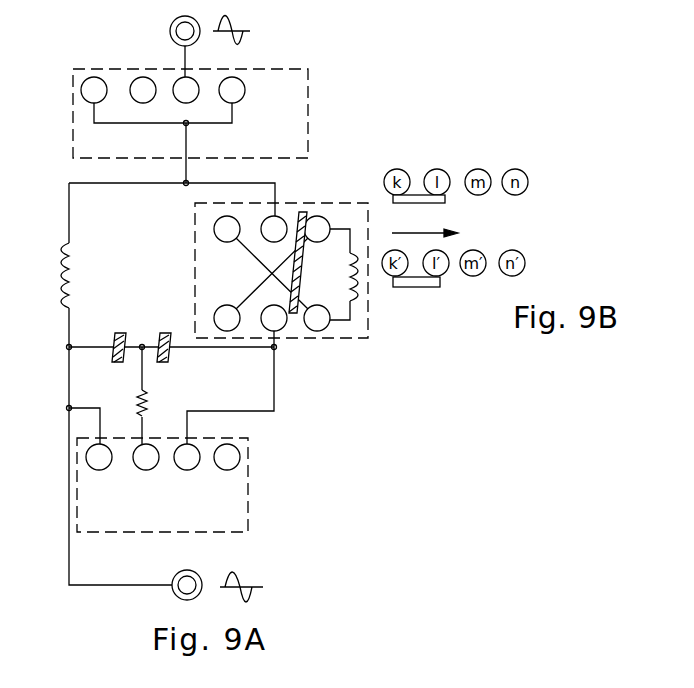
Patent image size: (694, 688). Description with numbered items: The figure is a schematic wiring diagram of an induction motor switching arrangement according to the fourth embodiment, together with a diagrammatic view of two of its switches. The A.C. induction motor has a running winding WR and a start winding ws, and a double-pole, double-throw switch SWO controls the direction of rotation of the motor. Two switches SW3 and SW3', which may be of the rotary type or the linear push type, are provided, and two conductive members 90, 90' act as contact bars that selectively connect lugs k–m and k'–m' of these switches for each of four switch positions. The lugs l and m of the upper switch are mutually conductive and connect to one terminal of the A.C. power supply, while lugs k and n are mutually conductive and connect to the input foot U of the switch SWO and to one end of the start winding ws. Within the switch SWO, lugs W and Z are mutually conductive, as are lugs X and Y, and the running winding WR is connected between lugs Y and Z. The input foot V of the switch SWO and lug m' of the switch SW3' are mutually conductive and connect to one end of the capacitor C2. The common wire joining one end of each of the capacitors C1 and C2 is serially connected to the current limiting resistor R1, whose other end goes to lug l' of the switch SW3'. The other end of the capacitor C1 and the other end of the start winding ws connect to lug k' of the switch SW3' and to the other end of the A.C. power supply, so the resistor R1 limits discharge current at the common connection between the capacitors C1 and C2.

In FIG. 9B, the conductive member 90 is at (421, 165).
In FIG. 9B, the conductive member 90' is at (430, 304).
In FIG. 9A, the switch SW3 is at (218, 113).
In FIG. 9A, the switch SW3' is at (195, 488).
In FIG. 9A, the double-pole, double-throw switch SWO is at (309, 273).
In FIG. 9A, the running winding WR is at (37, 275).
In FIG. 9A, the start winding ws is at (338, 277).
In FIG. 9A, the capacitor C1 is at (119, 336).
In FIG. 9A, the capacitor C2 is at (163, 336).
In FIG. 9A, the current limiting resistor R1 is at (151, 403).